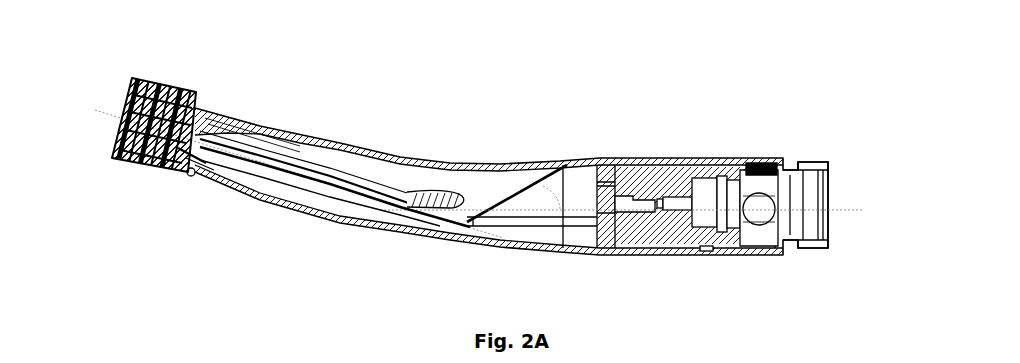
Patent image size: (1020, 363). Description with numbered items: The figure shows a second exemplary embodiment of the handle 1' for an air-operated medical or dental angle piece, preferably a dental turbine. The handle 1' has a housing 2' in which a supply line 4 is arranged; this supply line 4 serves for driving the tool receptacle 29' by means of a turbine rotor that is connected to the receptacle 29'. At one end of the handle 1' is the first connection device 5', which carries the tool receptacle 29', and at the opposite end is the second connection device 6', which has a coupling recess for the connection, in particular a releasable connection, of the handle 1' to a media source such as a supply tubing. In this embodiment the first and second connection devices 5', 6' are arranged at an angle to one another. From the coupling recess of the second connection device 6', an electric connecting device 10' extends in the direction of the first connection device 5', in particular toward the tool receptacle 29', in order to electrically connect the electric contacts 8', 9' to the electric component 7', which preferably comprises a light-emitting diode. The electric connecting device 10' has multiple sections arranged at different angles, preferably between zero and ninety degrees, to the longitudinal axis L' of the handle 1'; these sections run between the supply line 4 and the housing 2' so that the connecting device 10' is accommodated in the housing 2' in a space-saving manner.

The handle 1' is at (510, 181).
The housing 2' is at (510, 181).
The supply line 4 is at (413, 195).
The first connection device 5' is at (510, 181).
The second connection device 6' is at (828, 208).
The electric component 7' is at (196, 189).
The electric contact 8' is at (766, 183).
The electric contact 9' is at (759, 209).
The electric connecting device 10' is at (522, 168).
The tool receptacle 29' is at (510, 181).
The longitudinal axis L' is at (625, 193).